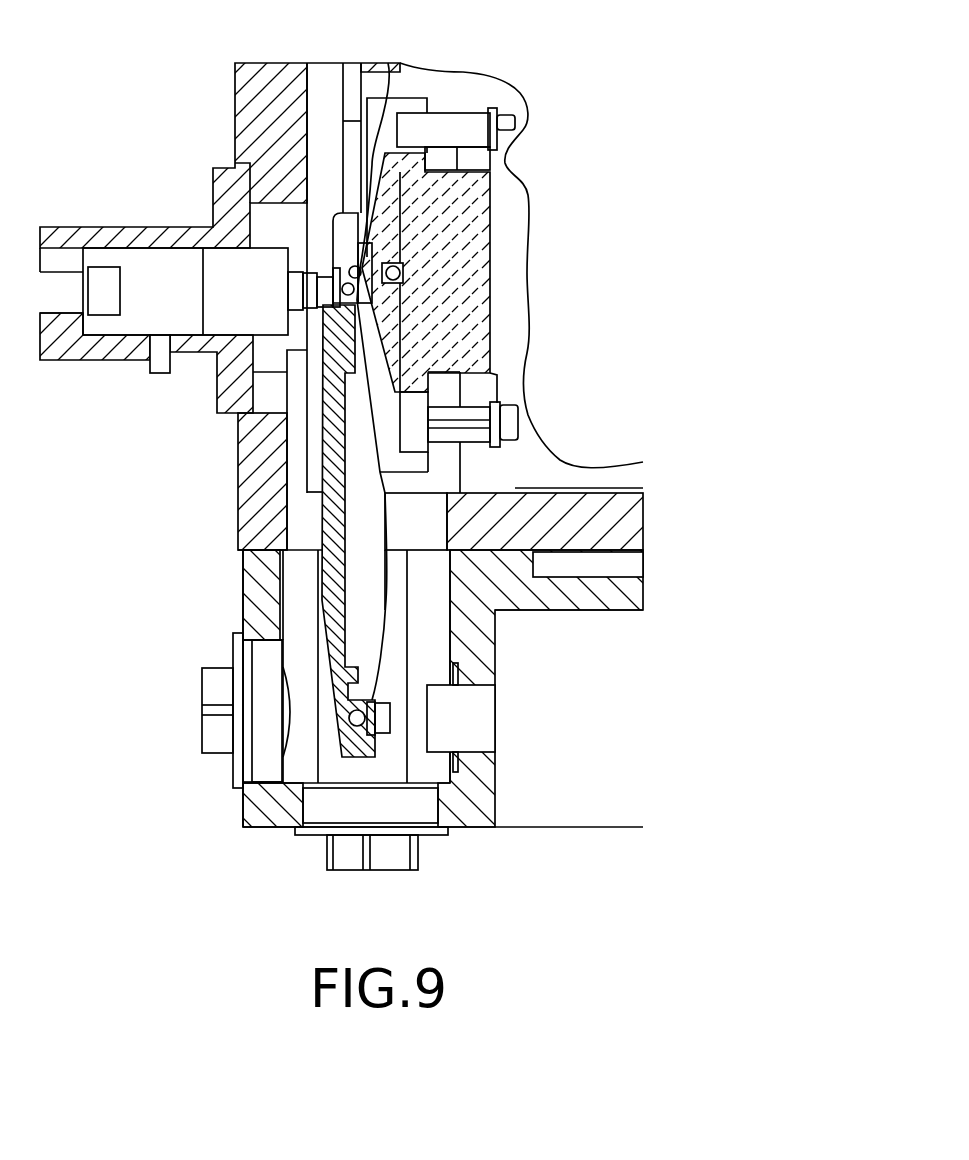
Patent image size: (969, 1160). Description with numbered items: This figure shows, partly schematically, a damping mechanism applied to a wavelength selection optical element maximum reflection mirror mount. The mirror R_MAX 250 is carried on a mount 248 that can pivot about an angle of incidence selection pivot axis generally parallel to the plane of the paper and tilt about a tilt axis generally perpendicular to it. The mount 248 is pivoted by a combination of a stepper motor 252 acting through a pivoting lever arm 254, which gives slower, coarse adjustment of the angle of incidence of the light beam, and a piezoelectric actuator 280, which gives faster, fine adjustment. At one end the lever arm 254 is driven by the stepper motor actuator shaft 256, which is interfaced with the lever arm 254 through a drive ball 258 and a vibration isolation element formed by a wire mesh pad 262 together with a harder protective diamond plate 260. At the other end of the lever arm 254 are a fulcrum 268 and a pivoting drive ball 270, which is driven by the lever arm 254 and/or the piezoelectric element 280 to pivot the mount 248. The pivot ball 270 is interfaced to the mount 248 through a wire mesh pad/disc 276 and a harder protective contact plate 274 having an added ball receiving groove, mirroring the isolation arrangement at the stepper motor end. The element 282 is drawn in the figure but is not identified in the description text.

The R_MAX mount 248 is at (388, 63).
The R_MAX 250 is at (493, 197).
The stepper motor 252 is at (533, 802).
The pivoting lever arm 254 is at (347, 520).
The stepper motor actuator shaft 256 is at (410, 715).
The drive ball 258 is at (362, 722).
The diamond plate 260 is at (372, 702).
The wire mesh pad 262 is at (382, 707).
The fulcrum 268 is at (352, 298).
The pivoting drive ball 270 is at (360, 283).
The protective contact plate 274 is at (358, 270).
The wire mesh pad/disc 276 is at (372, 265).
The piezoelectric actuator 280 is at (142, 250).
The push rod 282 is at (330, 287).